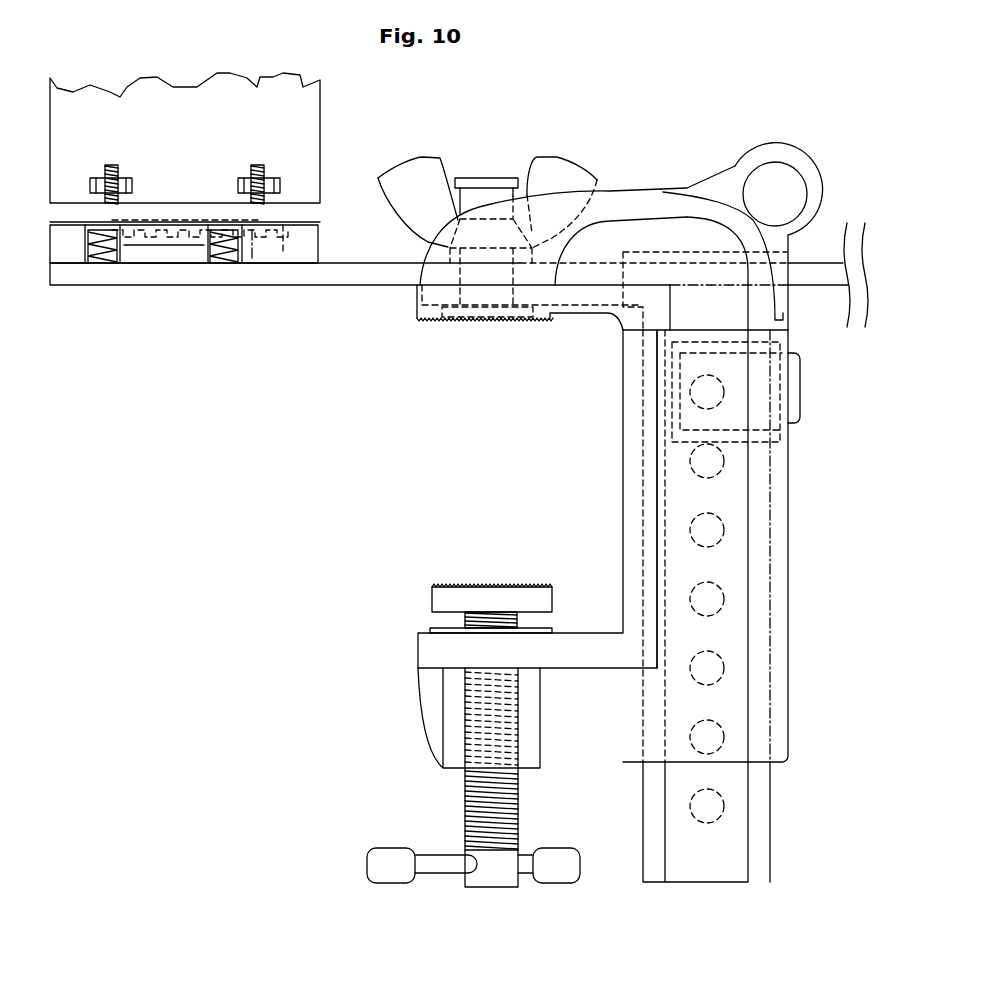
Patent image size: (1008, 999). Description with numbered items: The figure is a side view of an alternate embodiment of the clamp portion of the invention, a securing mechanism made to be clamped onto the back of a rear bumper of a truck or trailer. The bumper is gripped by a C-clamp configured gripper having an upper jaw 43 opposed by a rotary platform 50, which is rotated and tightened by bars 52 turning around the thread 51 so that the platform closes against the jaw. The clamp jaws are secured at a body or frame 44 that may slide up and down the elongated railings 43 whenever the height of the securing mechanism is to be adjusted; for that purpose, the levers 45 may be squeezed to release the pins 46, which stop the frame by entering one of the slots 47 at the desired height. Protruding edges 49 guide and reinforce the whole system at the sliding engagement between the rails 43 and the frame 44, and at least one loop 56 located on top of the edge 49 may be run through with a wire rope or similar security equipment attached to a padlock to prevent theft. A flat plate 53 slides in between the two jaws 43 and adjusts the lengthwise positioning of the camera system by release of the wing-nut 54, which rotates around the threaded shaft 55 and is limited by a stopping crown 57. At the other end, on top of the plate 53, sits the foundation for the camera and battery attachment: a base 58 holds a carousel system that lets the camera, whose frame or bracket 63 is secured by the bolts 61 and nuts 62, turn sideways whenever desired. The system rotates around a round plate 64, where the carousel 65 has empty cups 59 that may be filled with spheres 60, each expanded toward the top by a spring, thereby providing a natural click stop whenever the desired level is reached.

The upper jaws / elongated railings 43 is at (425, 320).
The body or frame 44 is at (783, 475).
The levers 45 is at (793, 387).
The pins 46 is at (698, 390).
The slots 47 is at (717, 600).
The protruding edges 49 is at (643, 197).
The rotary platform 50 is at (490, 597).
The thread 51 is at (465, 800).
The bars 52 is at (447, 872).
The flat plate 53 is at (367, 270).
The wing-nut 54 is at (560, 173).
The threaded shaft 55 is at (478, 207).
The loop 56 is at (810, 165).
The stopping crown 57 is at (473, 182).
The base 58 is at (310, 250).
The empty cups 59 is at (158, 242).
The spheres 60 is at (100, 238).
The bolts 61 is at (107, 167).
The nuts 62 is at (122, 185).
The frame / bracket 63 is at (300, 147).
The round plate 64 is at (177, 257).
The carousel 65 is at (268, 250).